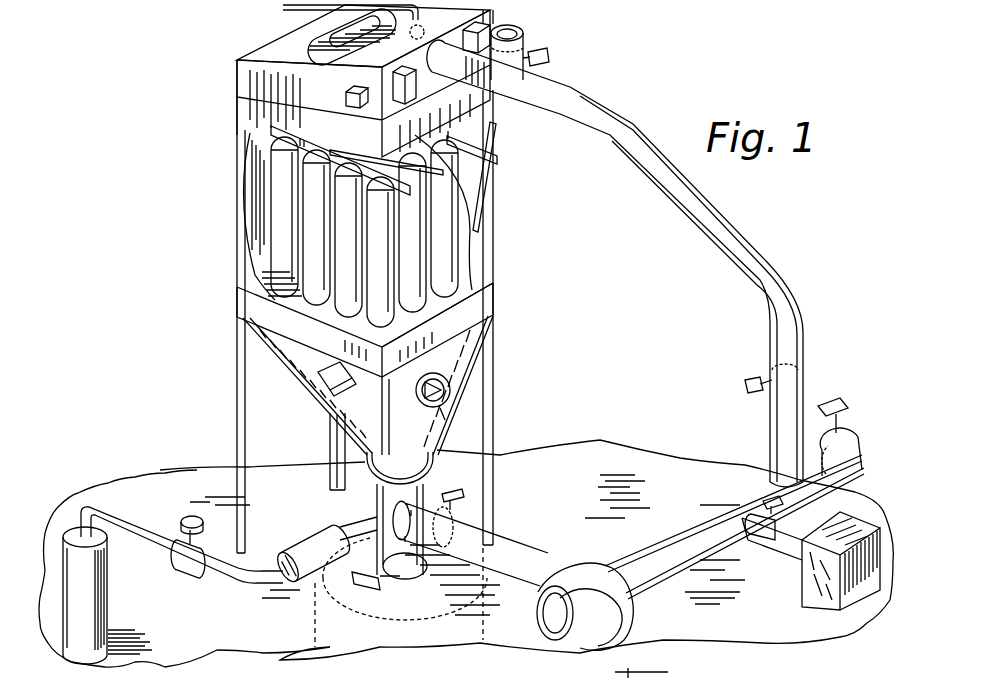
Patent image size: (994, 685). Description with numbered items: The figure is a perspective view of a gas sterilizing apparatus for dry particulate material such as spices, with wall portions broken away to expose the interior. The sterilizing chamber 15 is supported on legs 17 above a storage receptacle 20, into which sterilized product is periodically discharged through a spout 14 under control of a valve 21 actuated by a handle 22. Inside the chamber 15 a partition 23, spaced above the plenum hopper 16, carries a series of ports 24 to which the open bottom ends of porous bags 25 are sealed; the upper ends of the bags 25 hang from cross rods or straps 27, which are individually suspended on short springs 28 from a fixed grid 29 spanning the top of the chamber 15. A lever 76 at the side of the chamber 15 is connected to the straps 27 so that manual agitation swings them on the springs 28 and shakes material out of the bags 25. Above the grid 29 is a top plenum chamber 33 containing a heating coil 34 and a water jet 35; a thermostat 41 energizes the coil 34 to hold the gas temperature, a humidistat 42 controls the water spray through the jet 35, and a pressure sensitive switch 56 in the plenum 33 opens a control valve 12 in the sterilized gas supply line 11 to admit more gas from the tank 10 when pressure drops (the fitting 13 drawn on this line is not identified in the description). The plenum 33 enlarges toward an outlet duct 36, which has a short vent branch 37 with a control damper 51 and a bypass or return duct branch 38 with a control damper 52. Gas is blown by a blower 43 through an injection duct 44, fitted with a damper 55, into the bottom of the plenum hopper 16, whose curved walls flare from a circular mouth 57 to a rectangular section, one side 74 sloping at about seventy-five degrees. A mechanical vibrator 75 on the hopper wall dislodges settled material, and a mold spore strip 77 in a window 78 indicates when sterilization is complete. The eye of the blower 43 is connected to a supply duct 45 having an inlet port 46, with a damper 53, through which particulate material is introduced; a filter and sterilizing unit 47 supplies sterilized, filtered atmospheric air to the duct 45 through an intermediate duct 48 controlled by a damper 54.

The tank 10 is at (94, 605).
The sterilized gas supply line 11 is at (147, 530).
The control valve 12 is at (182, 562).
The filter cylinder 13 is at (318, 546).
The spout 14 is at (383, 508).
The sterilizing chamber 15 is at (236, 176).
The plenum hopper 16 is at (462, 344).
The legs 17 is at (236, 393).
The storage receptacle 20 is at (313, 617).
The valve 21 is at (428, 578).
The handle 22 is at (372, 596).
The partition 23 is at (300, 320).
The ports 24 is at (458, 292).
The porous bags 25 is at (344, 258).
The cross rods or straps 27 is at (334, 152).
The short springs 28 is at (303, 136).
The fixed grid 29 is at (271, 132).
The top plenum chamber 33 is at (236, 58).
The heating coil 34 is at (300, 44).
The water jet 35 is at (422, 28).
The outlet duct 36 is at (470, 74).
The vent duct branch 37 is at (516, 30).
The bypass or return duct branch 38 is at (642, 132).
The thermostat 41 is at (404, 102).
The humidistat 42 is at (482, 26).
The blower 43 is at (590, 574).
The injection duct 44 is at (528, 547).
The supply duct 45 is at (696, 520).
The inlet port 46 is at (850, 440).
The filter and sterilizing unit 47 is at (802, 596).
The intermediate duct 48 is at (748, 534).
The control damper 51 is at (524, 46).
The control damper 52 is at (770, 366).
The control damper 53 is at (846, 474).
The control damper 54 is at (769, 536).
The control damper 55 is at (468, 512).
The pressure sensitive switch 56 is at (348, 90).
The mouth 57 is at (440, 484).
The side 74 is at (433, 458).
The mechanical vibrator 75 is at (326, 388).
The lever 76 is at (507, 133).
The mold spore strip 77 is at (442, 388).
The window 78 is at (440, 420).